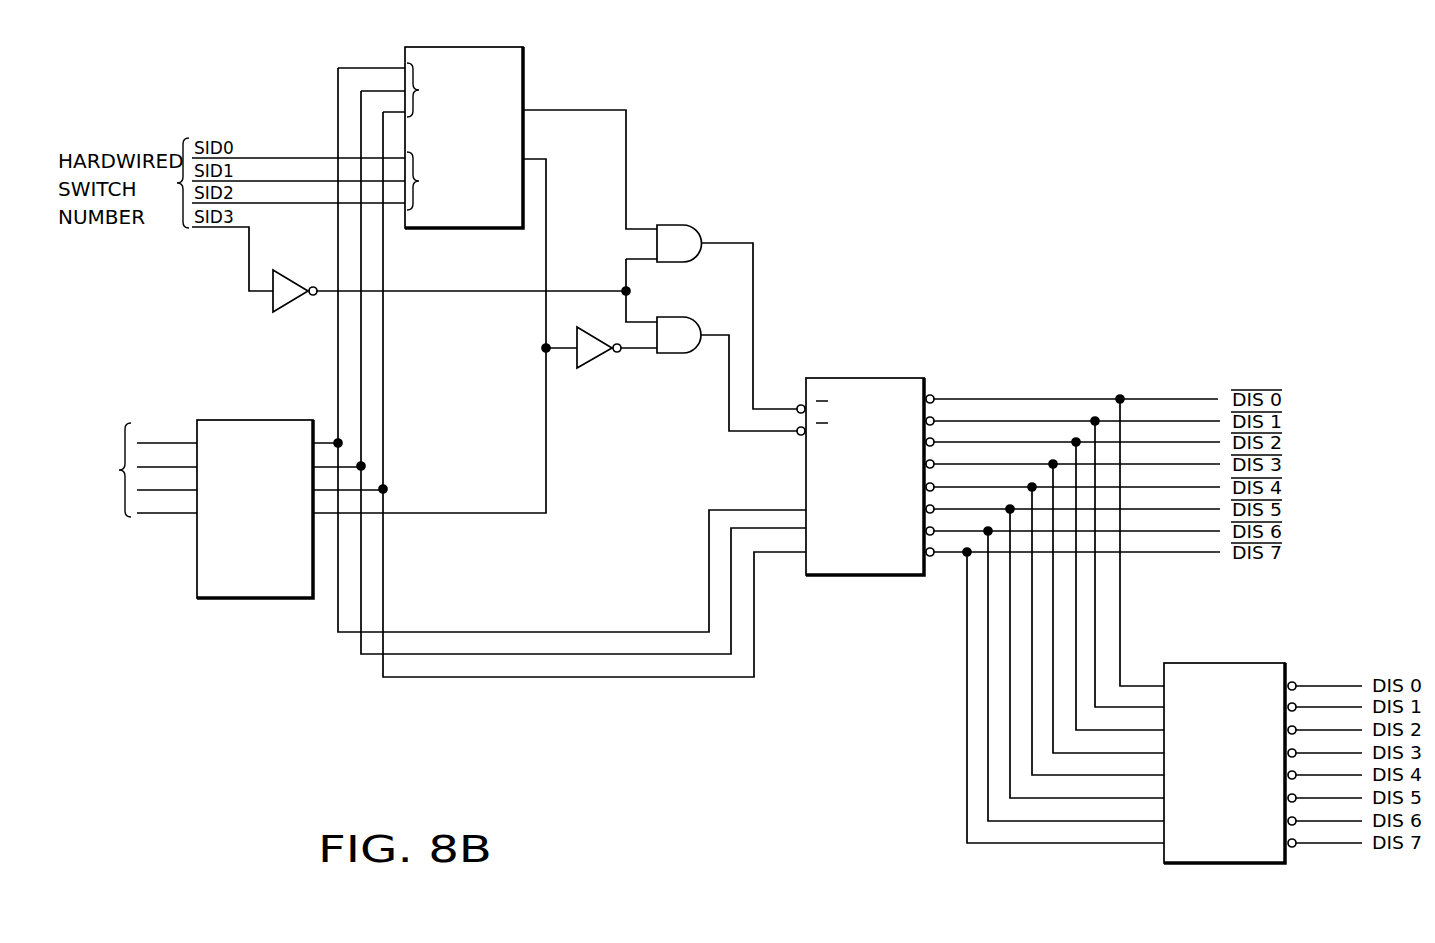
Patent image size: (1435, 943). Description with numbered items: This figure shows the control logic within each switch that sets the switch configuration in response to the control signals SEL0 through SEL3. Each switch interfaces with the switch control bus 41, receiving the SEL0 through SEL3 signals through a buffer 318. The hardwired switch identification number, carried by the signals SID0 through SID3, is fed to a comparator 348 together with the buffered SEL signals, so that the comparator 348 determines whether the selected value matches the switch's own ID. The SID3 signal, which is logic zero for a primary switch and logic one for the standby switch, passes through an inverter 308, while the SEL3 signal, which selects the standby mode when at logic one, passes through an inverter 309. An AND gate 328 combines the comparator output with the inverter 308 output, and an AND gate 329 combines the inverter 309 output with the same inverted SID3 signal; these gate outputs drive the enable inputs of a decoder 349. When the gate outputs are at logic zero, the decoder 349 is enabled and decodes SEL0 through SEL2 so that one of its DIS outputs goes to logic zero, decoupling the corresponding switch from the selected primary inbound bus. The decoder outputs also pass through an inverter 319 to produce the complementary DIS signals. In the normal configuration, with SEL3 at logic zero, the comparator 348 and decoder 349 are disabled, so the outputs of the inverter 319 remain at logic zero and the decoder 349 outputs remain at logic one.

The comparator 348 is at (470, 47).
The AND gate 328 is at (675, 225).
The AND gate 329 is at (675, 317).
The inverter 308 is at (292, 309).
The inverter 309 is at (598, 362).
The buffer 318 is at (278, 598).
The decoder 349 is at (870, 378).
The inverter 319 is at (1232, 663).
The switch control bus 41 is at (127, 482).